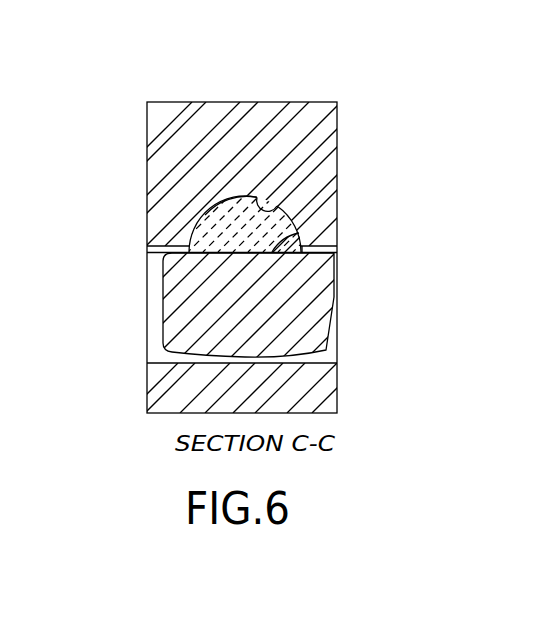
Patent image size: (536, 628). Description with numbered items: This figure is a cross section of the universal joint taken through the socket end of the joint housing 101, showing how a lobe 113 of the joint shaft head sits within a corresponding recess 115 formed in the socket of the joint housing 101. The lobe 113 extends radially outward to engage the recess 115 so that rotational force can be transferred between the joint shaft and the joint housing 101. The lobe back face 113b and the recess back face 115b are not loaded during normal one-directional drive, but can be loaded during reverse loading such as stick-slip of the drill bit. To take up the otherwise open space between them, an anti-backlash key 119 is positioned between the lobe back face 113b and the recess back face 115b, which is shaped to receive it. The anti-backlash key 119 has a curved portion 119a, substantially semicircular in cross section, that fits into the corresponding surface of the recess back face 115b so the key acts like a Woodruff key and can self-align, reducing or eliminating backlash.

The joint housing 101 is at (276, 101).
The lobe 113 is at (307, 272).
The lobe back face 113b is at (277, 237).
The recess 115 is at (135, 372).
The recess back face 115b is at (277, 207).
The anti-backlash key 119 is at (217, 218).
The curved portion 119a is at (235, 196).